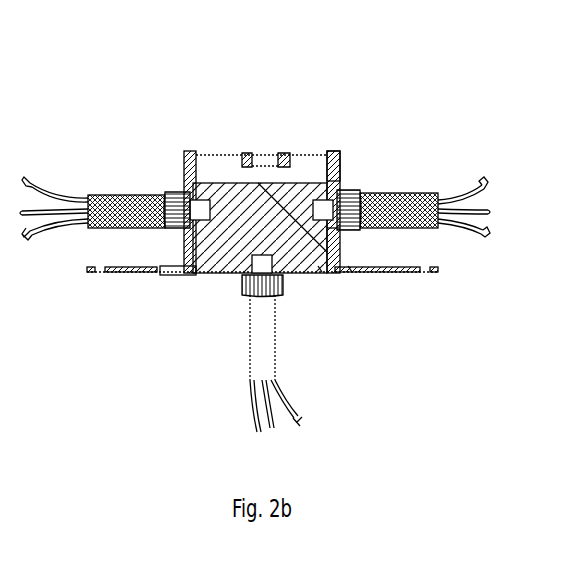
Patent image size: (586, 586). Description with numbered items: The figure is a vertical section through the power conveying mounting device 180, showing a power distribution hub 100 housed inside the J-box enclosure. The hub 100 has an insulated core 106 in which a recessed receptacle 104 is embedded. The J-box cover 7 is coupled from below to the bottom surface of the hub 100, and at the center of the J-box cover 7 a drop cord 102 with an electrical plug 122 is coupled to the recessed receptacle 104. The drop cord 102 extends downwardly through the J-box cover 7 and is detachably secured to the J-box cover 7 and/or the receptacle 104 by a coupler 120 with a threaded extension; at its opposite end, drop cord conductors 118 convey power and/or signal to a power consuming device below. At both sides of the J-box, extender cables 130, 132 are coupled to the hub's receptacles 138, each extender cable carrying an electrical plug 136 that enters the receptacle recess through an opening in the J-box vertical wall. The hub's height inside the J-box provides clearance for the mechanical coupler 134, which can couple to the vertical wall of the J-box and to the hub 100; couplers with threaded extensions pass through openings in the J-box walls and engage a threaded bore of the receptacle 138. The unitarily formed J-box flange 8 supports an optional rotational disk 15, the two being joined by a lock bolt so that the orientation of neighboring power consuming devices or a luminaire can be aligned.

The power conveying mounting device 180 is at (157, 48).
The extender cable 130 is at (126, 200).
The second cable 132 is at (452, 192).
The power distribution hub 100 is at (217, 185).
The insulated core 106 is at (262, 212).
The receptacle 138 is at (325, 185).
The mechanical coupler 134 is at (356, 193).
The rotational disk 15 is at (130, 266).
The electrical plug 122 is at (256, 257).
The recessed receptacle 104 is at (274, 250).
The electrical plug 136 is at (330, 252).
The coupler 120 is at (243, 290).
The J-box cover 7 is at (318, 279).
The J-box flange 8 is at (349, 279).
The drop cord 102 is at (278, 362).
The drop cord conductors 118 is at (262, 405).